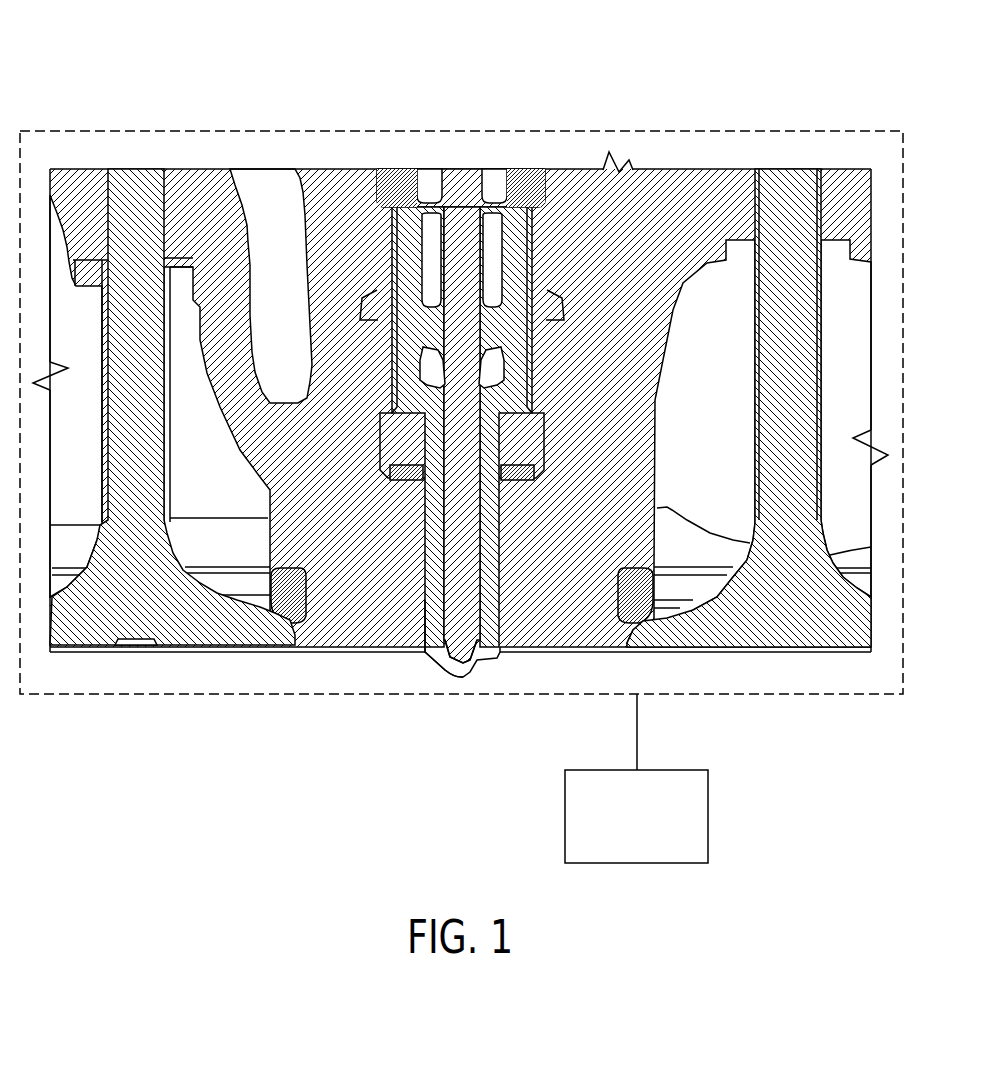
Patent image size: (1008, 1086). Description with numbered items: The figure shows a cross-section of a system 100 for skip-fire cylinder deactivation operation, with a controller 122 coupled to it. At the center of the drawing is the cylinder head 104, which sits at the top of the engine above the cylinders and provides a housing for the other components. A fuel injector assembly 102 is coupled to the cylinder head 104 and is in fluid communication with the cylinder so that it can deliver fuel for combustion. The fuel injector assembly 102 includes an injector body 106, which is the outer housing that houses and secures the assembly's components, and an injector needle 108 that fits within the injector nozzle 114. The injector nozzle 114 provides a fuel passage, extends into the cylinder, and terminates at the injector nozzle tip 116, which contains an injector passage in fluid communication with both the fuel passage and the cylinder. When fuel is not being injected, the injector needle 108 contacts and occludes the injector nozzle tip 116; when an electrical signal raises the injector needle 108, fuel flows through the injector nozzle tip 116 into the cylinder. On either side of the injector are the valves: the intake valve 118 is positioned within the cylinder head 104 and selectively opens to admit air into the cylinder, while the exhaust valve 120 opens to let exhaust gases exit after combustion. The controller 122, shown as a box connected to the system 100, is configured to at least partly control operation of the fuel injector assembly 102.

The system 100 is at (188, 46).
The fuel injector assembly 102 is at (450, 128).
The cylinder head 104 is at (678, 178).
The injector body 106 is at (405, 180).
The injector needle 108 is at (475, 178).
The injector nozzle 114 is at (440, 652).
The injector nozzle tip 116 is at (473, 660).
The intake valve 118 is at (797, 625).
The exhaust valve 120 is at (92, 627).
The controller 122 is at (620, 842).